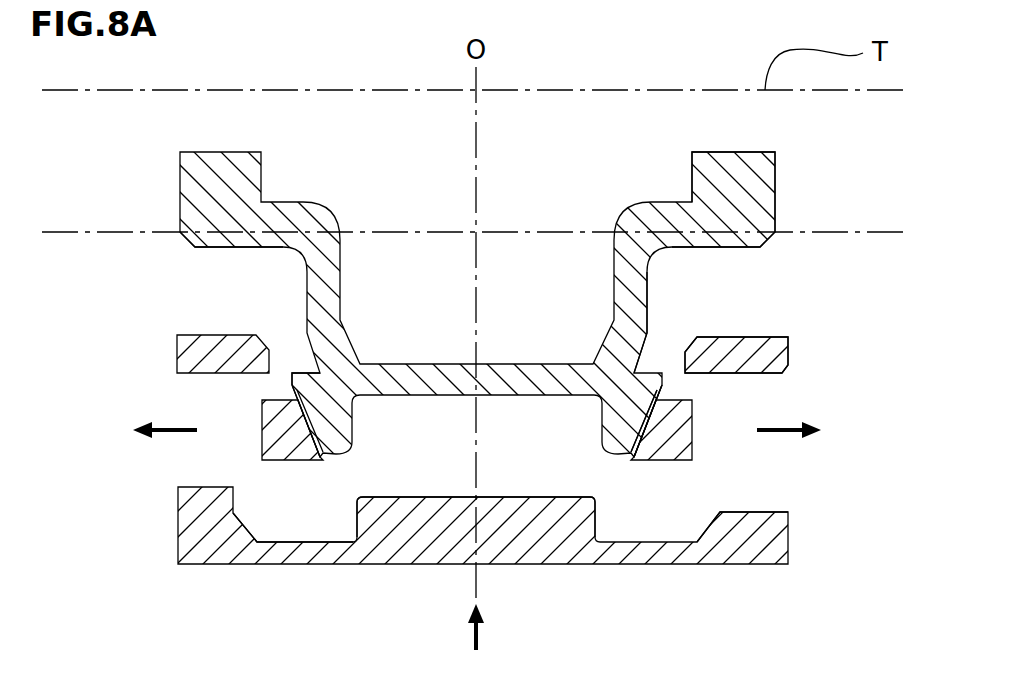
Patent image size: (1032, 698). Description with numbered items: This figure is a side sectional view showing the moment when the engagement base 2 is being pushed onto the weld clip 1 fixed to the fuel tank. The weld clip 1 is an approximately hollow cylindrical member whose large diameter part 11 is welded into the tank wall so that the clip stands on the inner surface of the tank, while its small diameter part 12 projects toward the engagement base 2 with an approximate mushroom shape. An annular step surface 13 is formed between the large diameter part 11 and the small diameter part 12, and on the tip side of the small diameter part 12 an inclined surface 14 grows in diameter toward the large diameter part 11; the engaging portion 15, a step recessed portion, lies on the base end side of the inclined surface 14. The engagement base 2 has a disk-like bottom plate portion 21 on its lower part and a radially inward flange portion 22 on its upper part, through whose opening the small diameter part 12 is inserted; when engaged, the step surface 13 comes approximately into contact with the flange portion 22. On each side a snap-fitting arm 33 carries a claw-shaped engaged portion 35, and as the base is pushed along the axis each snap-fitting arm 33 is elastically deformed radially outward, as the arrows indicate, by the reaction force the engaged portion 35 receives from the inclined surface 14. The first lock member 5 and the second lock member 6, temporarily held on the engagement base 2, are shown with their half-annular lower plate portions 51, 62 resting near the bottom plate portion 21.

The weld clip 1 is at (146, 188).
The large diameter part 11 is at (799, 190).
The small diameter part 12 is at (676, 289).
The step surface 13 is at (223, 248).
The inclined surface 14 is at (652, 437).
The engaging portion 15 is at (303, 373).
The engagement base 2 is at (212, 583).
The bottom plate portion 21 is at (405, 555).
The flange portion 22 is at (748, 342).
The snap-fitting arm 33 is at (246, 444).
The engaged portion 35 is at (278, 422).
The first lock member 5 is at (831, 354).
The second lock member 6 is at (116, 356).
The lower plate portion 51 is at (735, 562).
The lower plate portion 62 is at (293, 564).